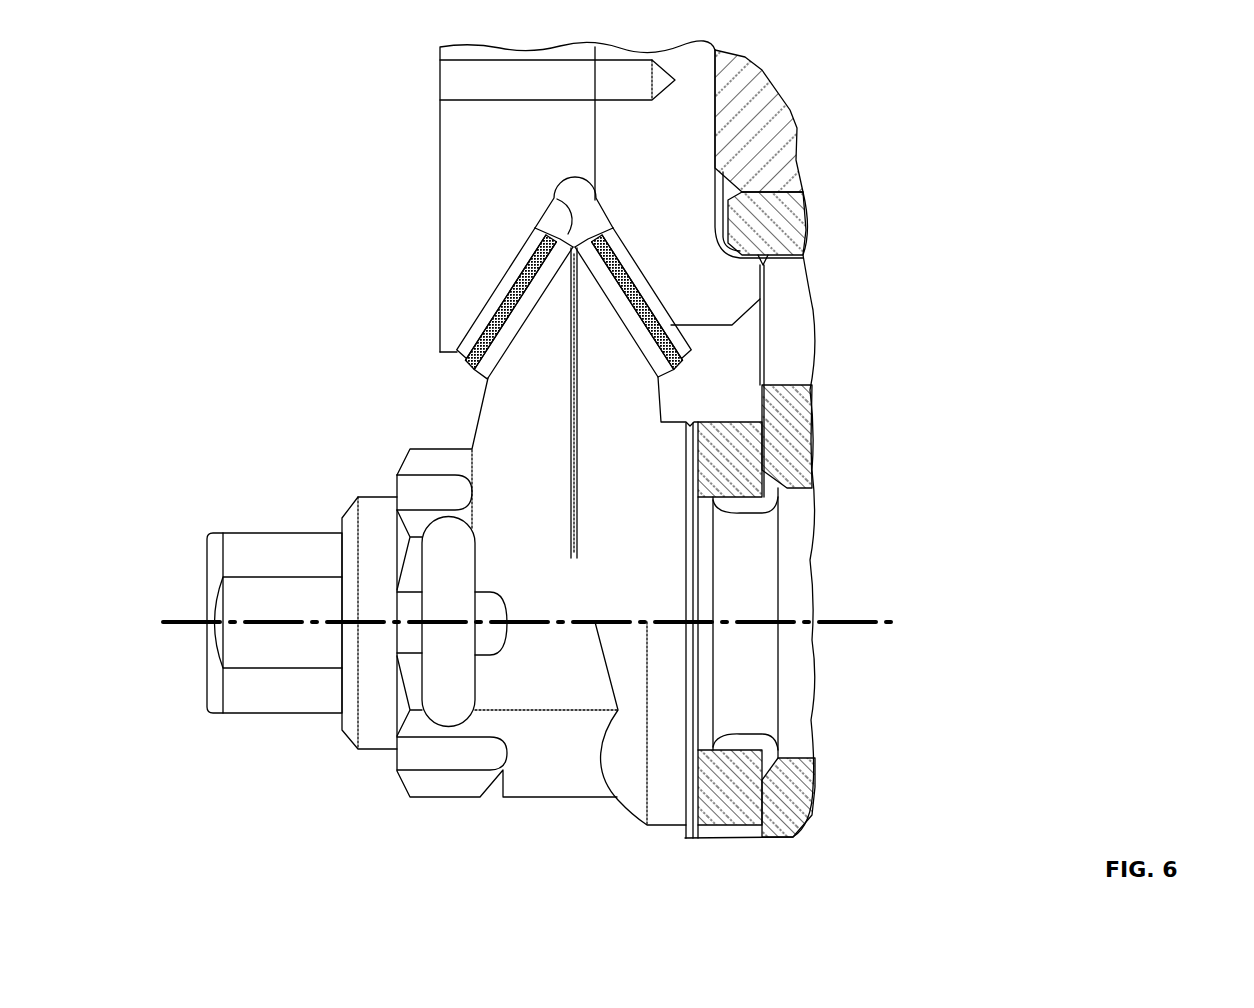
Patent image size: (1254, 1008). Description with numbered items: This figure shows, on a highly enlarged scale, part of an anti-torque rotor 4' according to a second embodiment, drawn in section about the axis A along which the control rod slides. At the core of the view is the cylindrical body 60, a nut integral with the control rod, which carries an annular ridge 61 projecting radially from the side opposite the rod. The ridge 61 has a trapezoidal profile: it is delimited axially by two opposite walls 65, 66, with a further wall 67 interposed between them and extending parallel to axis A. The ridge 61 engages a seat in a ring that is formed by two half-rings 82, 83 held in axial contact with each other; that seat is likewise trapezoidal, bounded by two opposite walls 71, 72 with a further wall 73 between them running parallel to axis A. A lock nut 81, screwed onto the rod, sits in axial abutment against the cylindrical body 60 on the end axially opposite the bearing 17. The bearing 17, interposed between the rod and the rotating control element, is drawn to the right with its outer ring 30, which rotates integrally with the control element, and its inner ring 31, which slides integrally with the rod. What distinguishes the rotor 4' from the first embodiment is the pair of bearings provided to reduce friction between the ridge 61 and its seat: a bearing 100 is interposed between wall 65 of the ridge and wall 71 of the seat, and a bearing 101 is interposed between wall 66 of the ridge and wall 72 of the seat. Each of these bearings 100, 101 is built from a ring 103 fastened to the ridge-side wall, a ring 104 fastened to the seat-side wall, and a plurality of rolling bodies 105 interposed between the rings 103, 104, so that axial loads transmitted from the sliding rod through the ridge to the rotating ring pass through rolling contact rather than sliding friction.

The anti-torque rotor 4' is at (990, 83).
The bearing 17 is at (852, 243).
The outer ring 30 is at (800, 206).
The inner ring 31 is at (797, 460).
The cylindrical body 60 is at (545, 685).
The annular ridge 61 is at (510, 410).
The wall 65 is at (522, 343).
The wall 66 is at (624, 325).
The further wall 67 is at (552, 210).
The wall 71 is at (556, 236).
The wall 72 is at (598, 217).
The further wall 73 is at (575, 232).
The lock nut 81 is at (250, 550).
The half-ring 82 is at (470, 116).
The half-ring 83 is at (700, 87).
The bearing 100 is at (462, 290).
The bearing 101 is at (680, 300).
The ring 103 is at (481, 376).
The ring 104 is at (468, 341).
The rolling bodies 105 is at (470, 366).
The axis A is at (895, 623).